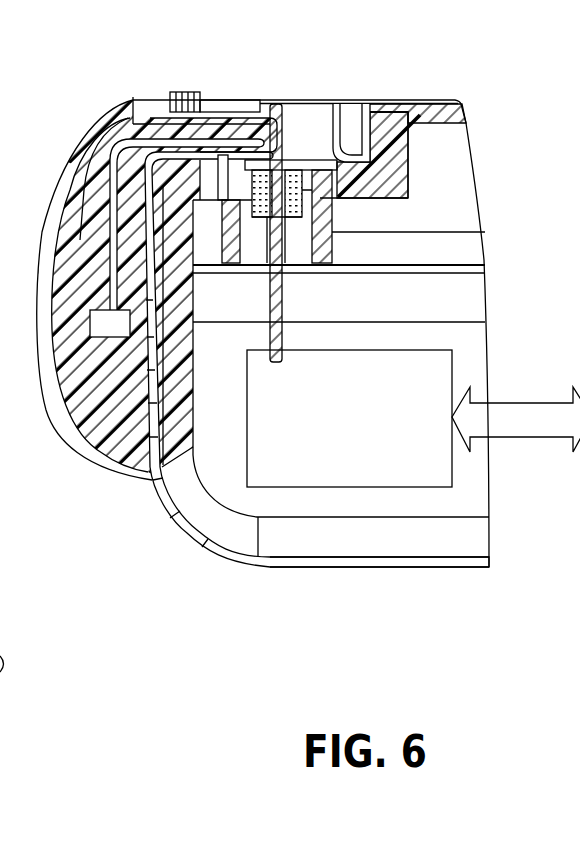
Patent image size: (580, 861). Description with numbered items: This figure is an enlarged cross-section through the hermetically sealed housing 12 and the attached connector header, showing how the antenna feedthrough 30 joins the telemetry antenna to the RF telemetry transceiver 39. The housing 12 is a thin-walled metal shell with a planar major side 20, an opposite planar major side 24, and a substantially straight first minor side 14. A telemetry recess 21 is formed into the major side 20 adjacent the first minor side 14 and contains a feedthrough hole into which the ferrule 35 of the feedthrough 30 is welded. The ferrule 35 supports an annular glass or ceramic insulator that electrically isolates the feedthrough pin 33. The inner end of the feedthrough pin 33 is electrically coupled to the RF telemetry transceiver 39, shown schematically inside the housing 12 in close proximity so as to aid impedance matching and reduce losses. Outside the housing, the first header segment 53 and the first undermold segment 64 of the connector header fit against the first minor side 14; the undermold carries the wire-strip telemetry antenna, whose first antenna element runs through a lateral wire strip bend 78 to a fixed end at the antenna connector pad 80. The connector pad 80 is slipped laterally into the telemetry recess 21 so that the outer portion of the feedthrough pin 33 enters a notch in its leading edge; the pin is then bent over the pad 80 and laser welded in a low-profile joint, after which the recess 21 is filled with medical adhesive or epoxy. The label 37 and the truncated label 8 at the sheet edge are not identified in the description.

The lead 8 is at (8, 456).
The hermetically sealed housing 12 is at (18, 554).
The first minor side 14 is at (150, 432).
The planar major side 20 is at (450, 100).
The telemetry recess 21 is at (345, 125).
The planar major side 24 is at (357, 567).
The telemetry antenna feedthrough 30 is at (292, 115).
The feedthrough pin 33 is at (232, 114).
The ferrule 35 is at (335, 228).
The insulating cup 37 is at (322, 120).
The RF telemetry transceiver 39 is at (338, 453).
The first header segment 53 is at (94, 150).
The first undermold segment 64 is at (93, 317).
The lateral wire strip bend 78 is at (73, 200).
The antenna connector pad 80 is at (136, 118).